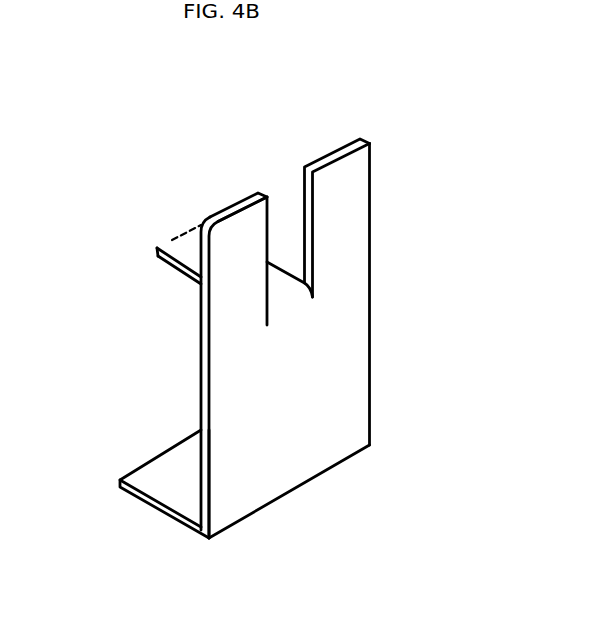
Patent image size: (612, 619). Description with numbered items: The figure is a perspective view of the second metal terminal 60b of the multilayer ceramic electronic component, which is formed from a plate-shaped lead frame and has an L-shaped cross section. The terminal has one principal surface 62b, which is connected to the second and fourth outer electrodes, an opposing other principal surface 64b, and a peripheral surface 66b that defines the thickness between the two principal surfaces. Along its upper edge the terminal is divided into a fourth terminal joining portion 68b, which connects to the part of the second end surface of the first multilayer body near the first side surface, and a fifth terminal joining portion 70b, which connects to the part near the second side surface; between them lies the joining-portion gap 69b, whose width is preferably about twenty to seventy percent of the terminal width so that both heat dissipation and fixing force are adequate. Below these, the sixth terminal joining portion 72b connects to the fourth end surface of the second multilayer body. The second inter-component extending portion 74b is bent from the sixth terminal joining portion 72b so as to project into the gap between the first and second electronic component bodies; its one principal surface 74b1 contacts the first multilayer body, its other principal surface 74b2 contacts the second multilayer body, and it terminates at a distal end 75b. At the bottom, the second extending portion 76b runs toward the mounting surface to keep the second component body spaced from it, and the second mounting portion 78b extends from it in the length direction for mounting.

The second metal terminal 60b is at (145, 143).
The one principal surface 62b is at (217, 408).
The other principal surface 64b is at (230, 377).
The peripheral surface 66b is at (206, 327).
The fourth terminal joining portion 68b is at (228, 238).
The joining-portion gap 69b is at (269, 229).
The fifth terminal joining portion 70b is at (343, 177).
The sixth terminal joining portion 72b is at (300, 352).
The second inter-component extending portion 74b is at (190, 235).
The one principal surface of the second inter-component extending portion 74b1 is at (172, 244).
The other principal surface of the second inter-component extending portion 74b2 is at (177, 276).
The distal end 75b is at (157, 252).
The second extending portion 76b is at (307, 447).
The second mounting portion 78b is at (175, 484).